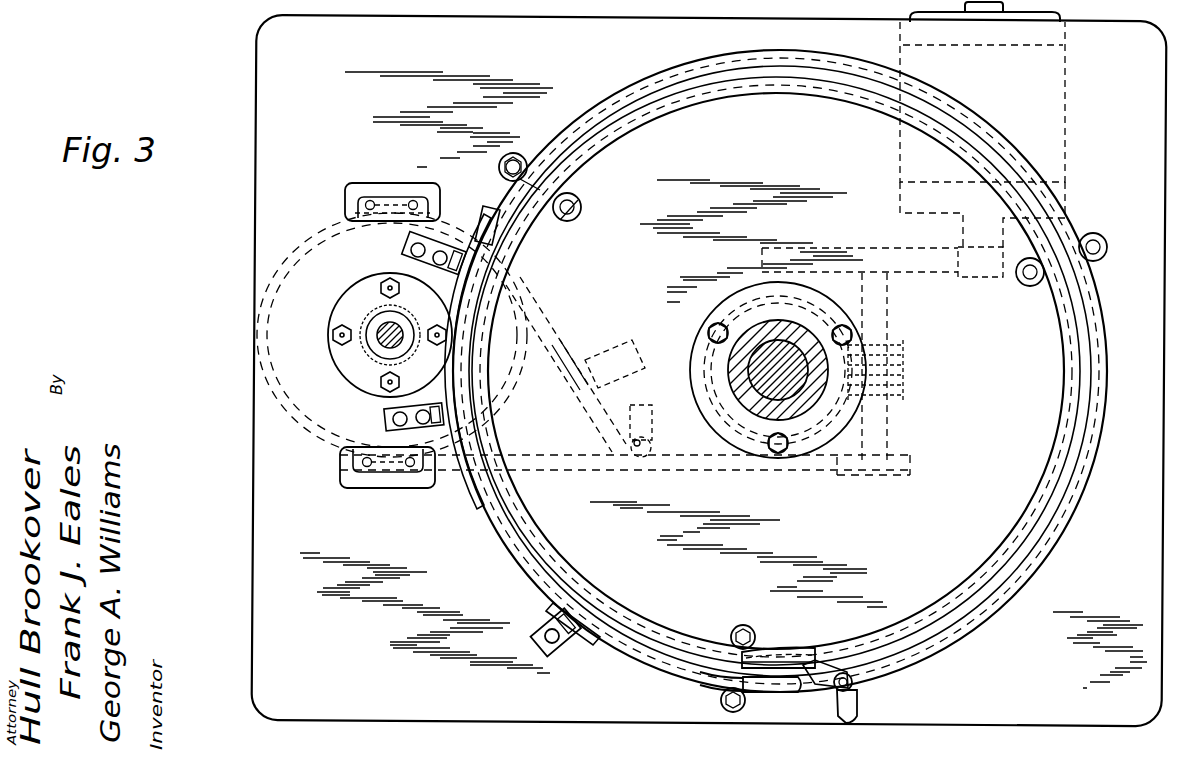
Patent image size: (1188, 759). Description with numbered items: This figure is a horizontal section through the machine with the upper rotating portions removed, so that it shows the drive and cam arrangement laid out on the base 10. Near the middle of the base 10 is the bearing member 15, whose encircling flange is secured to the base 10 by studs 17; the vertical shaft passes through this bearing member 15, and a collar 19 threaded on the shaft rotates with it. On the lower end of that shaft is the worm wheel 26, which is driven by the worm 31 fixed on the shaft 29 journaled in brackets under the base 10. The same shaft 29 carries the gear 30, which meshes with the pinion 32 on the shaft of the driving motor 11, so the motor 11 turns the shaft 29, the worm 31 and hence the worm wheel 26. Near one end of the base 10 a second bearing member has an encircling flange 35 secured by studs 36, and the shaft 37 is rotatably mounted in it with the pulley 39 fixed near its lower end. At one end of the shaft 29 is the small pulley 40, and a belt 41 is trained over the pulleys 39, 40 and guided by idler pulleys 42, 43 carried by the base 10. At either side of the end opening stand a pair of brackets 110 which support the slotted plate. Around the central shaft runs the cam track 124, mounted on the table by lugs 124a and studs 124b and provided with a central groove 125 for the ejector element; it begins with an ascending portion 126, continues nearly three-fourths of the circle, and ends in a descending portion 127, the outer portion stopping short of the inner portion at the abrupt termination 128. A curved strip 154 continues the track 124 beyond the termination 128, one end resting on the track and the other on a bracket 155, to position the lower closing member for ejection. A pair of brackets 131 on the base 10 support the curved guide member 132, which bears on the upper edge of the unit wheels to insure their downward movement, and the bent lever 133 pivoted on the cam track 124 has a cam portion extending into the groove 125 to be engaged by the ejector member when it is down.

The base 10 is at (709, 370).
The driving motor 11 is at (1058, 125).
The bearing member 15 is at (730, 368).
The studs 17 is at (708, 332).
The collar 19 is at (803, 350).
The worm wheel 26 is at (848, 403).
The shaft 29 is at (887, 322).
The gear 30 is at (914, 275).
The worm 31 is at (900, 370).
The pinion 32 is at (982, 283).
The encircling flange 35 is at (336, 305).
The studs 36 is at (334, 340).
The shaft 37 is at (384, 342).
The pulley 39 is at (498, 402).
The small pulley 40 is at (893, 473).
The belt 41 is at (535, 462).
The idler pulley 42 is at (655, 445).
The idler pulley 43 is at (570, 400).
The brackets 110 is at (400, 193).
The cam track 124 is at (1082, 500).
The lugs 124a is at (583, 207).
The studs 124b is at (1102, 258).
The central groove 125 is at (1030, 550).
The ascending portion 126 is at (527, 235).
The descending portion 127 is at (795, 650).
The abrupt termination 128 is at (895, 668).
The brackets 131 is at (402, 247).
The curved guide member 132 is at (468, 487).
The bent lever 133 is at (858, 702).
The curved strip 154 is at (650, 666).
The bracket 155 is at (548, 615).